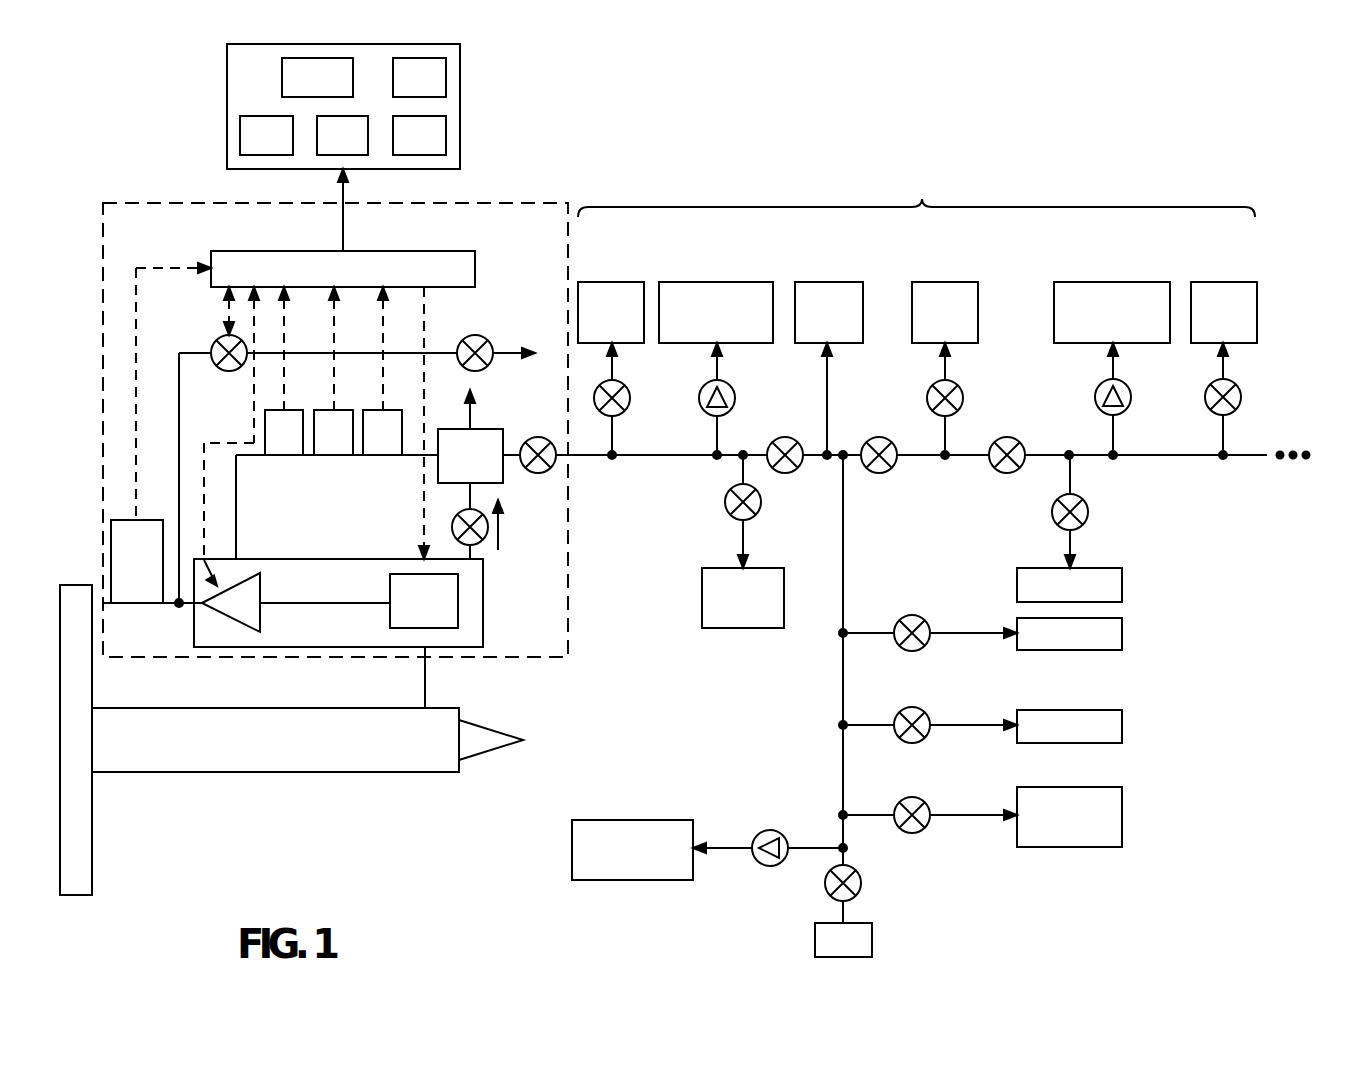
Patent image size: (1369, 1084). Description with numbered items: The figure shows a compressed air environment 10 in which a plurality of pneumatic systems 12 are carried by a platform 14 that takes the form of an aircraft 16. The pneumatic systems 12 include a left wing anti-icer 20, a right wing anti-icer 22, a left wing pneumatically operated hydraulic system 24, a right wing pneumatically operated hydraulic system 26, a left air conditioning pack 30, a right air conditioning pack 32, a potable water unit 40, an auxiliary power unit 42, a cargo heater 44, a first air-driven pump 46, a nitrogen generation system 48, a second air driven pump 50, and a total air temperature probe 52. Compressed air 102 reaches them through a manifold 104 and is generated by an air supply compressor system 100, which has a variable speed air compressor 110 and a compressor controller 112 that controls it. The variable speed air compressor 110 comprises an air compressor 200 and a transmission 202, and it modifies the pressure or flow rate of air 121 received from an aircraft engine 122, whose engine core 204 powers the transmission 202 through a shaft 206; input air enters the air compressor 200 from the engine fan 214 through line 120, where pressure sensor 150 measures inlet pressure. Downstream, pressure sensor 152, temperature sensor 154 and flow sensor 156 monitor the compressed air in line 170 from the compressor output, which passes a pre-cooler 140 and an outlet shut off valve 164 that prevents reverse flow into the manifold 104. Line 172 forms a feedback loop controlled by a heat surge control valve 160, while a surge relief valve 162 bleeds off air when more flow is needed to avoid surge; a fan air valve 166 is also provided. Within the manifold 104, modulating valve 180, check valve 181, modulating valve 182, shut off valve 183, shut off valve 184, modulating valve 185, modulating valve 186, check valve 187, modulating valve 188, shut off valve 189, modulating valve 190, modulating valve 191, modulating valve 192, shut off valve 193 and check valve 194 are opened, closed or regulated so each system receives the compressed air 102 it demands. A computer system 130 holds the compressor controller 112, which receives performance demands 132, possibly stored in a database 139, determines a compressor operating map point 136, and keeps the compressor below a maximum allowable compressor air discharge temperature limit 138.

The compressed air environment 10 is at (1190, 103).
The pneumatic systems 12 is at (916, 193).
The platform 14 is at (1260, 197).
The aircraft 16 is at (1265, 235).
The left wing anti-icer (WAI) 20 is at (610, 282).
The right wing anti-icer (WAI) 22 is at (1223, 282).
The left wing pneumatically operated hydraulic system 24 is at (715, 282).
The right wing pneumatically operated hydraulic system 26 is at (1112, 282).
The left air conditioning (L AC) pack 30 is at (702, 595).
The right air conditioning (R AC) pack 32 is at (1122, 590).
The potable water unit 40 is at (632, 820).
The auxiliary power unit (APU) 42 is at (872, 940).
The cargo heater 44 is at (1122, 820).
The first air-driven pump (ADP) 46 is at (1122, 730).
The nitrogen generation system (NGS) 48 is at (1122, 640).
The second air driven pump (ADP) 50 is at (945, 282).
The Total Air Temperature probe (TAT) 52 is at (827, 282).
The air supply compressor system 100 is at (548, 195).
The compressed air 102 is at (590, 458).
The manifold 104 is at (655, 450).
The variable speed air compressor 110 is at (327, 559).
The compressor controller 112 is at (302, 91).
The line 120 is at (170, 606).
The air 121 is at (189, 609).
The aircraft engine 122 is at (291, 740).
The computer system 130 is at (460, 107).
The performance demands 132 is at (251, 149).
The compressor operating map point 136 is at (327, 149).
The maximum allowable compressor air discharge temperature limit 138 is at (405, 149).
The database 139 is at (405, 91).
The pre-cooler 140 is at (455, 469).
The pressure sensor 150 is at (122, 591).
The pressure sensor 152 is at (281, 456).
The temperature sensor 154 is at (333, 456).
The flow sensor 156 is at (384, 456).
The heat surge control valve (HSCV) 160 is at (230, 372).
The surge relief valve 162 is at (488, 340).
The outlet shut off valve 164 is at (528, 437).
The fan air valve (FAV) 166 is at (483, 540).
The line 170 is at (236, 530).
The line 172 is at (191, 352).
The modulating valve 180 is at (628, 390).
The check valve 181 is at (733, 393).
The modulating valve 182 is at (725, 502).
The shut off valve 183 is at (796, 472).
The shut off valve 184 is at (880, 473).
The modulating valve 185 is at (927, 392).
The modulating valve 186 is at (1005, 437).
The check valve 187 is at (1098, 413).
The modulating valve 188 is at (1240, 390).
The shut off valve 189 is at (1052, 503).
The modulating valve 190 is at (905, 615).
The modulating valve 191 is at (905, 707).
The modulating valve 192 is at (905, 797).
The shut off valve 193 is at (861, 883).
The check valve 194 is at (765, 830).
The air compressor 200 is at (262, 592).
The transmission 202 is at (409, 614).
The engine core (high speed spool) 204 is at (220, 763).
The shaft 206 is at (425, 690).
The engine fan 214 is at (92, 860).